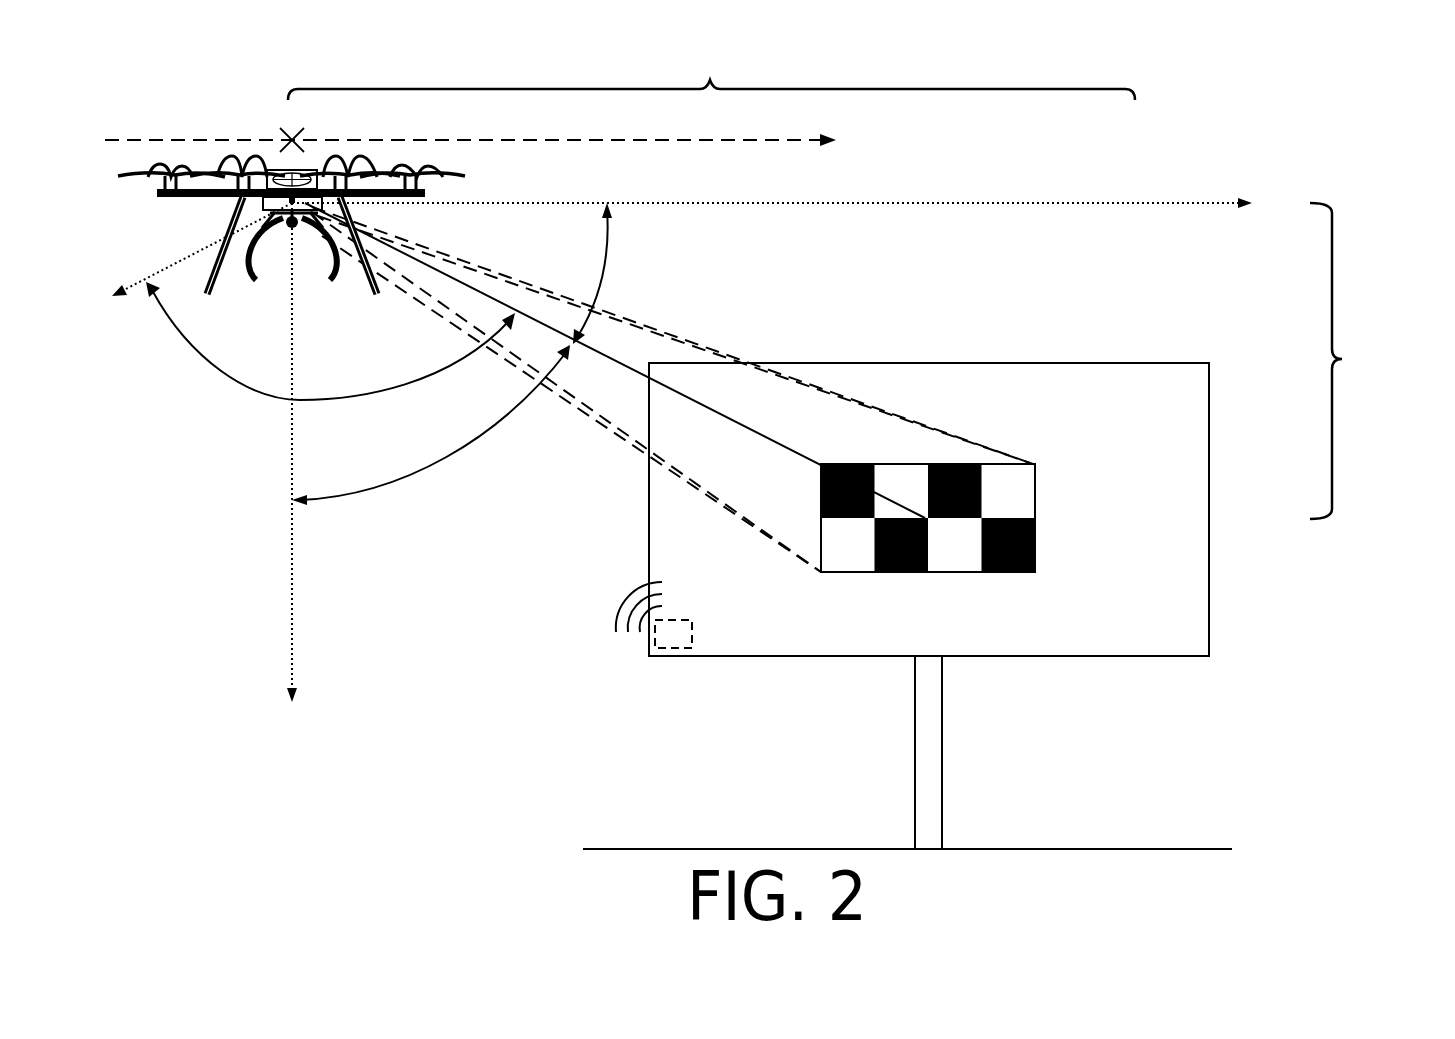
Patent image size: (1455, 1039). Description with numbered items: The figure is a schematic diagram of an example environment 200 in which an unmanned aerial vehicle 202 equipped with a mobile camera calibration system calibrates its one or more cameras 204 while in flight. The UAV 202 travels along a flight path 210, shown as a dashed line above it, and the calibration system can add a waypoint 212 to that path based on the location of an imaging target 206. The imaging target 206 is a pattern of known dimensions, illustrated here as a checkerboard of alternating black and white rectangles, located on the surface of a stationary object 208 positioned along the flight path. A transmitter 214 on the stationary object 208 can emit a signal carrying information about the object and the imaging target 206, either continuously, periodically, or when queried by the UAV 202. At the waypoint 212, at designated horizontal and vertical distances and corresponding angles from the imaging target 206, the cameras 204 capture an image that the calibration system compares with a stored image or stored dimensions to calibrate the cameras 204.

The environment 200 is at (1370, 84).
The unmanned aerial vehicle 202 is at (344, 224).
The camera 204 is at (262, 163).
The imaging target 206 is at (1036, 520).
The stationary object 208 is at (920, 362).
The flight path 210 is at (180, 136).
The waypoint 212 is at (298, 137).
The transmitter 214 is at (680, 648).